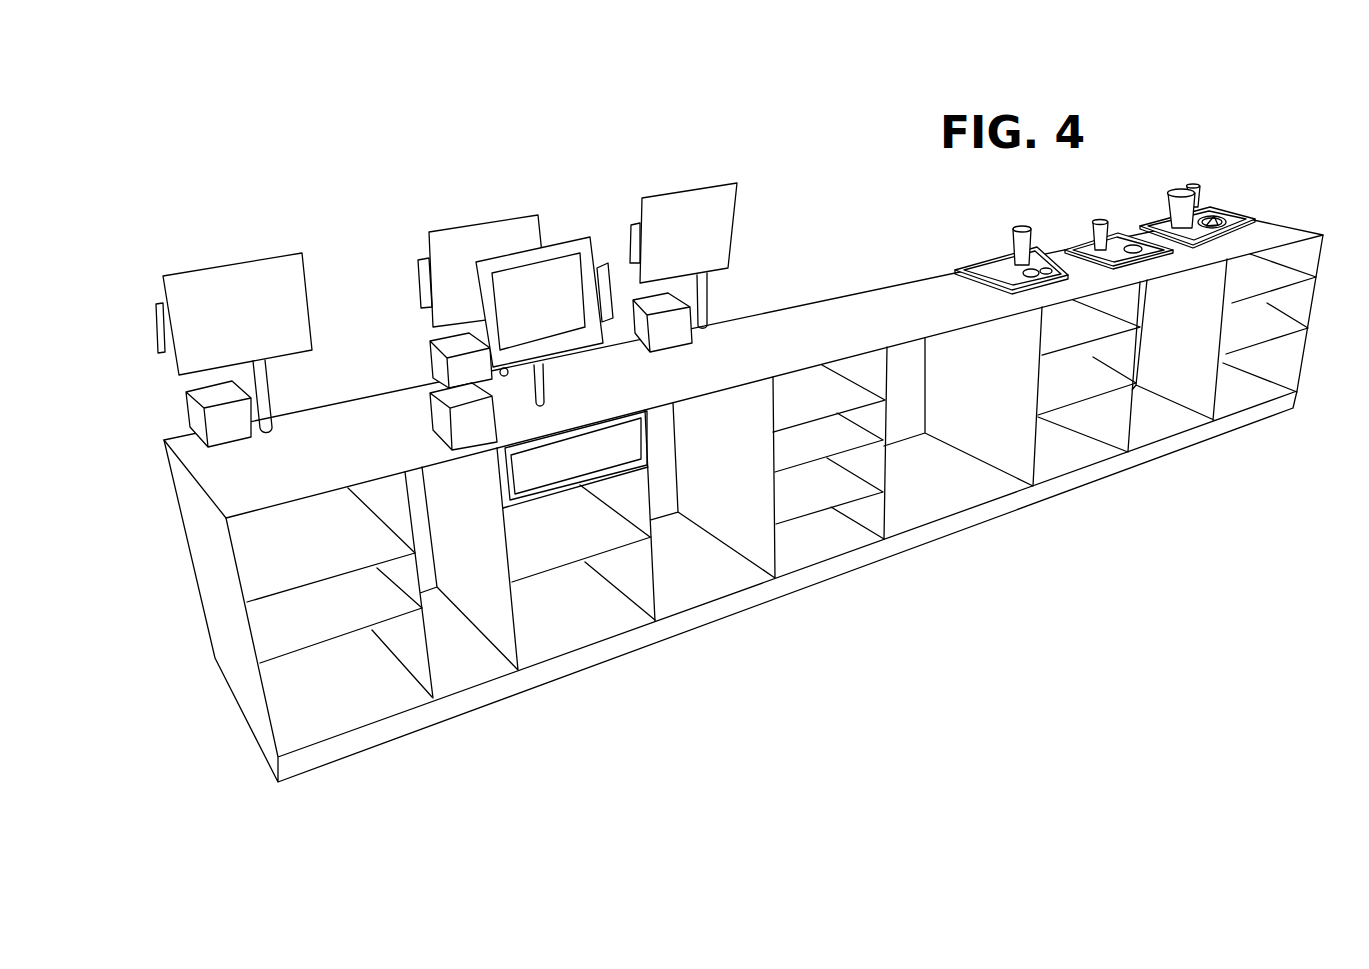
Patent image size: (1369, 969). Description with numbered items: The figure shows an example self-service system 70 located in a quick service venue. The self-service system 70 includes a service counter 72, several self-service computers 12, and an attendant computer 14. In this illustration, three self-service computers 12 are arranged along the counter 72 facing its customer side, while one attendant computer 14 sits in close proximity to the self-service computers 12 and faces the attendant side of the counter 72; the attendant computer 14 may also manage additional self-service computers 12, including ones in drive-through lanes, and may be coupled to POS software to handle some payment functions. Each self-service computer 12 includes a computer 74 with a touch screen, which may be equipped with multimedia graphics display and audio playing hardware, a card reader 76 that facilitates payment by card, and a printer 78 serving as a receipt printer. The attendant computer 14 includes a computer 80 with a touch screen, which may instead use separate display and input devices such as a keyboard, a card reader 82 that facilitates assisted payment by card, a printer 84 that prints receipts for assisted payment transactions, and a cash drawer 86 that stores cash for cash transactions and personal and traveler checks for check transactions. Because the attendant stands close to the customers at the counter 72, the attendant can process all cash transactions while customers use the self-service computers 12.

The self-service computer 12 is at (521, 437).
The attendant computer 14 is at (713, 427).
The self-service system 70 is at (766, 418).
The service counter 72 is at (1278, 220).
The computer 74 is at (188, 270).
The card reader 76 is at (155, 320).
The printer 78 is at (399, 479).
The computer 80 is at (713, 427).
The card reader 82 is at (560, 323).
The printer 84 is at (469, 437).
The cash drawer 86 is at (557, 468).